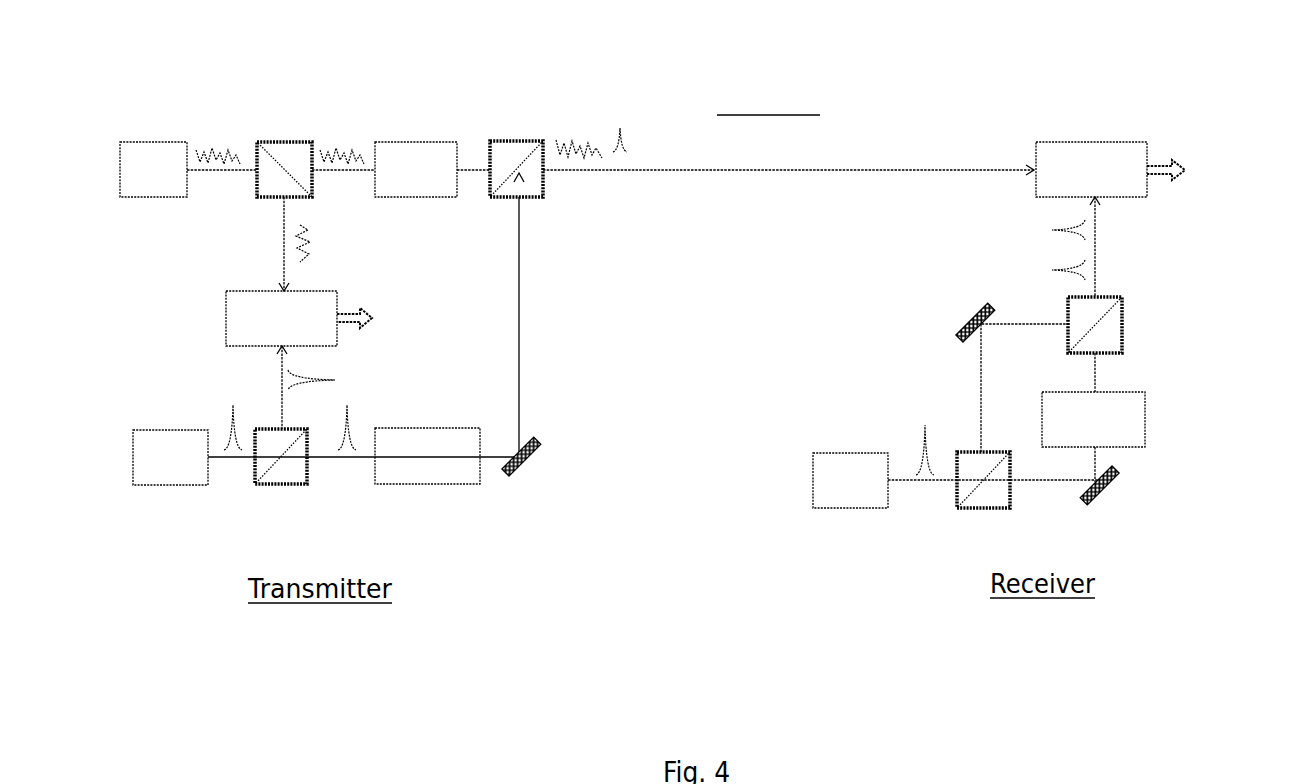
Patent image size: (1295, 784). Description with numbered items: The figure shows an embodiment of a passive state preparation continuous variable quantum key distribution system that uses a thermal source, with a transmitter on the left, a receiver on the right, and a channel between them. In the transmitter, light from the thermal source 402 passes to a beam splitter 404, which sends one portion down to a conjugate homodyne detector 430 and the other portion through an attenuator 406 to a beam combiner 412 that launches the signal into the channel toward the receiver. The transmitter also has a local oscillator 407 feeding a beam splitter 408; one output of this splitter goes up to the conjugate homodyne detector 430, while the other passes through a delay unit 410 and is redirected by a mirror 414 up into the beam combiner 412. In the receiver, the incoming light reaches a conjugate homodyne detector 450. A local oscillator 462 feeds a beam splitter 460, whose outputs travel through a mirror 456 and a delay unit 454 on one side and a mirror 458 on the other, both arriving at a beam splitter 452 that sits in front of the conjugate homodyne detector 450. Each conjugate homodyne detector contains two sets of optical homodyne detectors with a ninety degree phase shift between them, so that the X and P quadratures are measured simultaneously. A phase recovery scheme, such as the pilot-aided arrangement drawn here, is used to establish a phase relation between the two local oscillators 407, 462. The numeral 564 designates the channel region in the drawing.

The thermal source 402 is at (149, 141).
The beam splitter 404 is at (257, 142).
The attenuator 406 is at (430, 141).
The local oscillator 407 is at (147, 430).
The beam splitter 408 is at (307, 466).
The delay unit 410 is at (425, 484).
The beam combiner 412 is at (543, 186).
The mirror 414 is at (506, 478).
The conjugate homodyne detector 430 is at (245, 290).
The conjugate homodyne detector 450 is at (1068, 141).
The beam splitter 452 is at (1121, 336).
The delay unit 454 is at (1146, 415).
The mirror 456 is at (1118, 474).
The mirror 458 is at (985, 306).
The beam splitter 460 is at (1010, 490).
The local oscillator 462 is at (888, 497).
The channel 564 is at (815, 71).